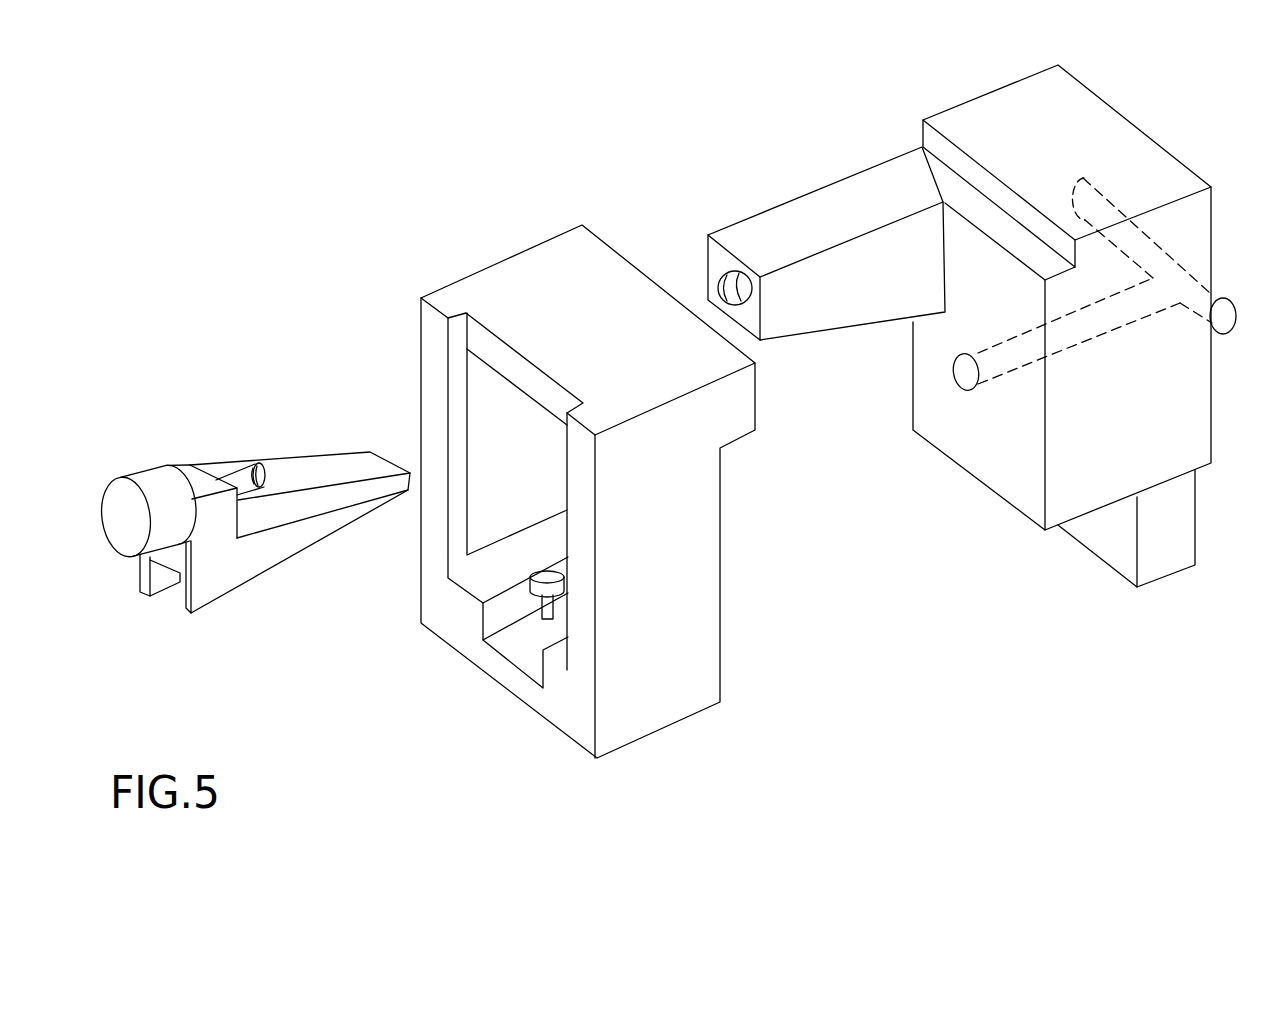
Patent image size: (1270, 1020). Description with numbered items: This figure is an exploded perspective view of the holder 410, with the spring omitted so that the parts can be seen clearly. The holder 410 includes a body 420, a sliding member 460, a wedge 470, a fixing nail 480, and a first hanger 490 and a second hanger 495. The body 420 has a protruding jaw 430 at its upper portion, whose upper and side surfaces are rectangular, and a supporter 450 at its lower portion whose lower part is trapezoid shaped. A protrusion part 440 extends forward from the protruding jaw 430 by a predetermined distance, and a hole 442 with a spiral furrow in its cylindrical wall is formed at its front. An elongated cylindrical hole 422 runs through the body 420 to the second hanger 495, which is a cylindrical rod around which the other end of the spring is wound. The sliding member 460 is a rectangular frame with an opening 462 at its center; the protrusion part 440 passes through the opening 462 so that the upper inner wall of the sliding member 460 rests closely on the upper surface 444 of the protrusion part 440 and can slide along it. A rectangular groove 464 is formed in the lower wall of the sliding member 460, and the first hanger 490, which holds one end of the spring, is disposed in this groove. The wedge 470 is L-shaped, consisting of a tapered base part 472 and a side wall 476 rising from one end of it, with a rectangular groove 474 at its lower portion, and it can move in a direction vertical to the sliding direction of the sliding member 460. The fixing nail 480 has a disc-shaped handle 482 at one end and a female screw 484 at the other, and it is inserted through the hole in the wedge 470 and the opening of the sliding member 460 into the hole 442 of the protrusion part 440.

The holder 410 is at (1130, 742).
The body 420 is at (1025, 534).
The elongated cylindrical hole 422 is at (963, 384).
The protruding jaw 430 is at (995, 113).
The protrusion part 440 is at (878, 360).
The hole 442 is at (737, 303).
The upper surface 444 is at (813, 218).
The supporter 450 is at (1173, 548).
The sliding member 460 is at (712, 601).
The opening 462 is at (495, 500).
The rectangular groove 464 is at (533, 665).
The wedge 470 is at (256, 601).
The tapered base part 472 is at (322, 525).
The rectangular groove 474 is at (170, 598).
The side wall 476 is at (196, 469).
The fixing nail 480 is at (148, 434).
The disc-shaped handle 482 is at (150, 476).
The female screw 484 is at (262, 467).
The first hanger 490 is at (542, 597).
The second hanger 495 is at (1228, 312).